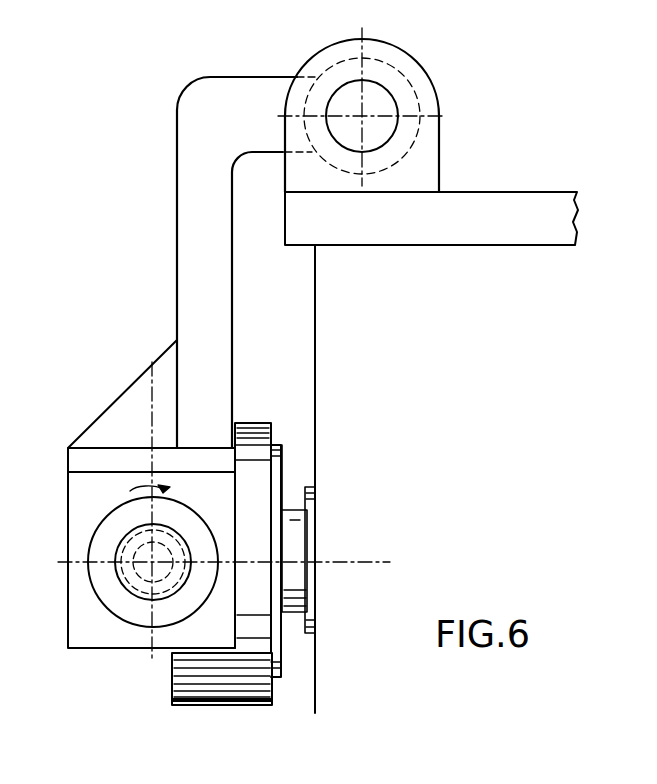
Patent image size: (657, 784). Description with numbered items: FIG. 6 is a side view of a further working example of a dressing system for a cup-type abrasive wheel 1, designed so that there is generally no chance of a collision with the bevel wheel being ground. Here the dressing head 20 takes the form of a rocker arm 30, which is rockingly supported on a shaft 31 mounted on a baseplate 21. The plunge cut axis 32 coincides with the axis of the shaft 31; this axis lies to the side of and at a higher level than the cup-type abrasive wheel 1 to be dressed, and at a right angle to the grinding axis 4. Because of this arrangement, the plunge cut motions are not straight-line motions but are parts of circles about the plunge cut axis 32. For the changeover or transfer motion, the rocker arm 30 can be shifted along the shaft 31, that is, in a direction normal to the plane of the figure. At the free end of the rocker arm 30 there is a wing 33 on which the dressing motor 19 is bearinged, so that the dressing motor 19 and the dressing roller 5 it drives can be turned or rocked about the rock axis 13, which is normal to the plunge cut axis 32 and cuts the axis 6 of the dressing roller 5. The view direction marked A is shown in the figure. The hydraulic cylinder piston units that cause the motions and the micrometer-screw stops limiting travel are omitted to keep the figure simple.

The dressing head 20 is at (135, 230).
The plunge cut axis 32 is at (363, 108).
The shaft 31 is at (380, 129).
The baseplate 21 is at (530, 226).
The rocker arm 30 is at (187, 276).
The rock axis 13 is at (152, 404).
The wing 33 is at (100, 457).
The dressing motor 19 is at (108, 540).
The dressing roller 5 is at (150, 564).
The axis of dressing roller 6 is at (152, 566).
The cup-type abrasive wheel 1 is at (262, 474).
The grinding axis 4 is at (362, 560).
The direction of view A is at (335, 693).